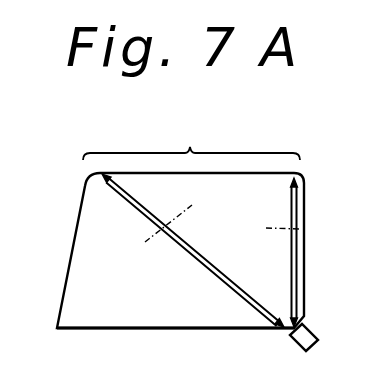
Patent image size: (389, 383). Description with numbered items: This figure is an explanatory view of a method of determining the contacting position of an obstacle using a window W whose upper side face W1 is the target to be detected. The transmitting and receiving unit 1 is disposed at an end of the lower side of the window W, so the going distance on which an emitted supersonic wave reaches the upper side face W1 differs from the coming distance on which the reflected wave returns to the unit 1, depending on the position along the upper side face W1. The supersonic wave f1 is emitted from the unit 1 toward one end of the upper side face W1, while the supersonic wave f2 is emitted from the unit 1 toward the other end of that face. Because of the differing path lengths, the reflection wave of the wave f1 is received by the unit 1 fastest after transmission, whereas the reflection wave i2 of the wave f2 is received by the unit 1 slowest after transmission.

The window W is at (71, 238).
The upper side-face of the window W1 is at (191, 137).
The supersonic wave emitted to an end of the upper side face f1 is at (175, 218).
The supersonic wave emitted to the other end of the upper side face f2 is at (300, 229).
The reflection wave of the supersonic wave f2 i2 is at (212, 235).
The transmitting and receiving unit 1 is at (320, 332).